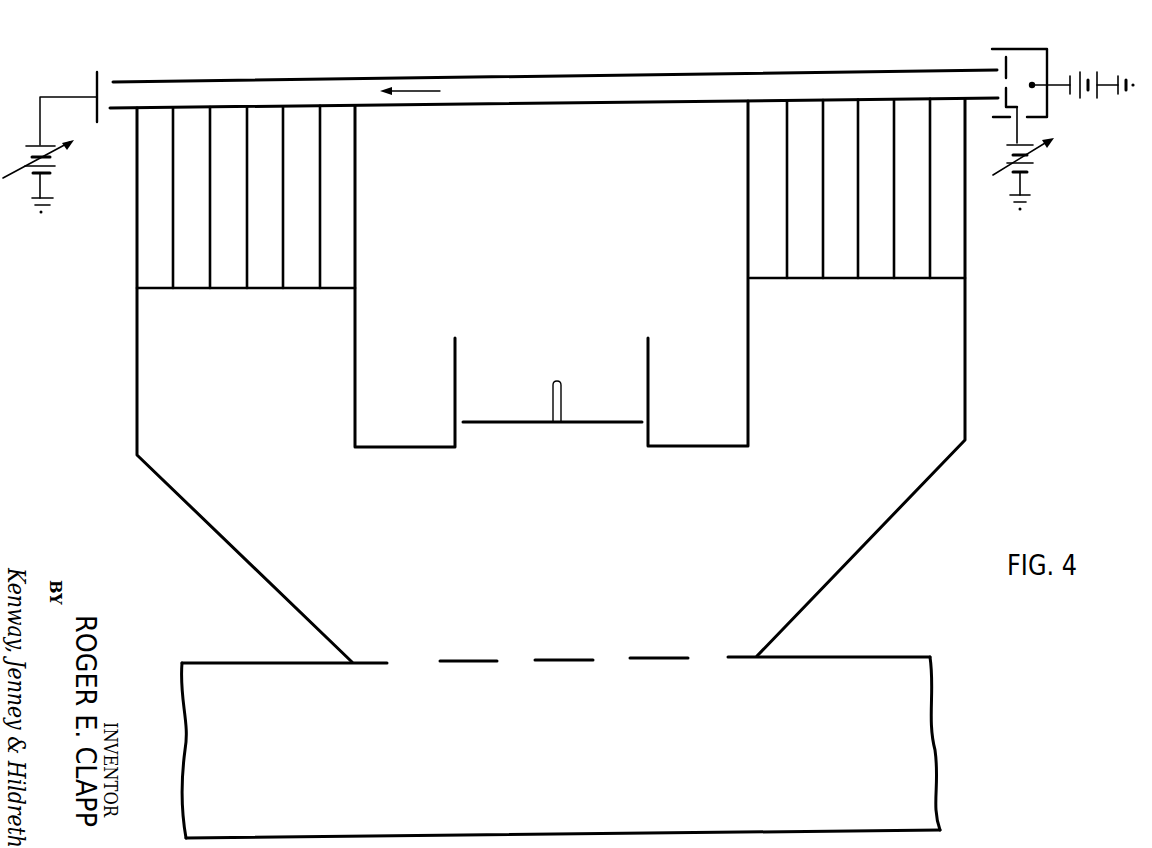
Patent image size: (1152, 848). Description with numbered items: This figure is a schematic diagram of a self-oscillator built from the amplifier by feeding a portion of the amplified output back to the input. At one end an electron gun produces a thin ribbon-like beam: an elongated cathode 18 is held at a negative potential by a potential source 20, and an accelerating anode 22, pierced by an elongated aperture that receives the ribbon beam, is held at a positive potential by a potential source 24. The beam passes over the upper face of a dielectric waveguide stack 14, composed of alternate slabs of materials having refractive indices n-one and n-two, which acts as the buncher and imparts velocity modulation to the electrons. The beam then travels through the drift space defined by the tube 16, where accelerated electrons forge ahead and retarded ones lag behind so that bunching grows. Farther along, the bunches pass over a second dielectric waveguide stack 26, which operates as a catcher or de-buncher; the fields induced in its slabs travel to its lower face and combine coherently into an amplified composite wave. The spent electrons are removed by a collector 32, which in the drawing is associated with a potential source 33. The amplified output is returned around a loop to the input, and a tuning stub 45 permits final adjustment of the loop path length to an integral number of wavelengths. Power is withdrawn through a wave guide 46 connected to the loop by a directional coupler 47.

The stack 14 is at (807, 278).
The tube 16 is at (653, 73).
The cathode 18 is at (1033, 66).
The potential source 20 is at (1087, 72).
The accelerating anode 22 is at (1005, 65).
The potential source 24 is at (1036, 159).
The dielectric waveguide stack 26 is at (197, 288).
The collector 32 is at (97, 85).
The variable voltage source 33 is at (55, 160).
The tuning stub 45 is at (569, 421).
The wave guide 46 is at (815, 758).
The directional coupler 47 is at (700, 658).